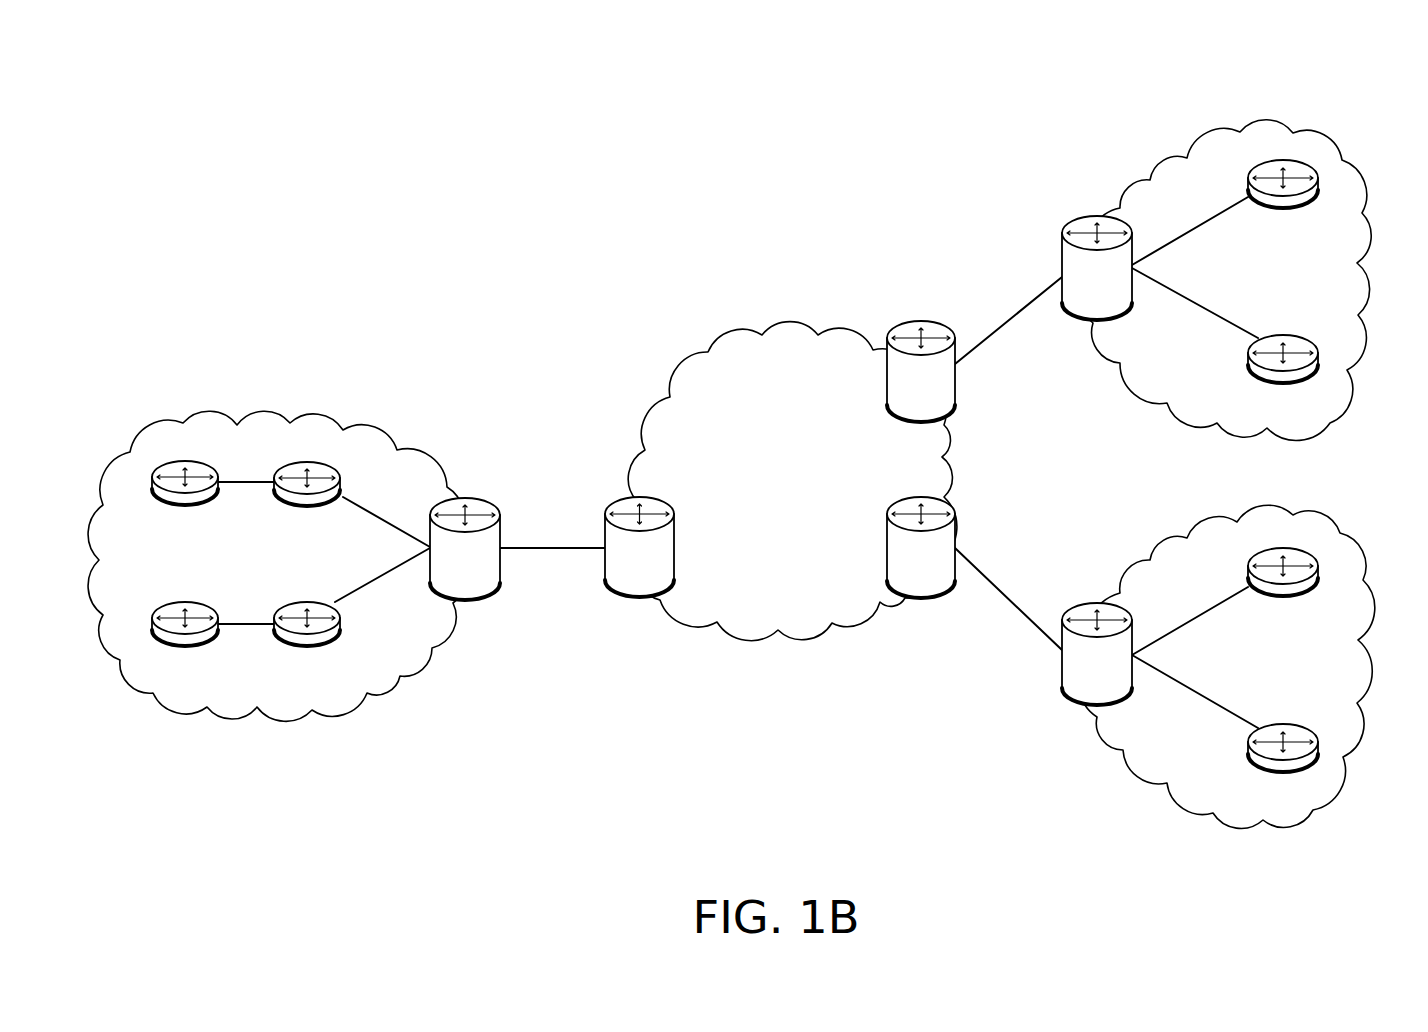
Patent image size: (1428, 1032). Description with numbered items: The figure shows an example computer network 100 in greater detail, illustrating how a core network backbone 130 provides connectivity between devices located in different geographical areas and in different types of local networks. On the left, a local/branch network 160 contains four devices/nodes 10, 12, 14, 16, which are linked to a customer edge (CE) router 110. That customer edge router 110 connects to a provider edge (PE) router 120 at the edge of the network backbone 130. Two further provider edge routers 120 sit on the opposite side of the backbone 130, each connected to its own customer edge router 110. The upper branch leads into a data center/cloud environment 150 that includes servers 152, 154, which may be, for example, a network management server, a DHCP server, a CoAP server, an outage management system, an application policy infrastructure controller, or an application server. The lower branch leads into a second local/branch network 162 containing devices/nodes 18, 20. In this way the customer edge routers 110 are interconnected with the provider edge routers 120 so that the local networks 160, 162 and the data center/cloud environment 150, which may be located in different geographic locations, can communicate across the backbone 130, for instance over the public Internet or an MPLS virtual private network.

The computer network 100 is at (1334, 66).
The device/node 10 is at (185, 499).
The device/node 12 is at (307, 500).
The device/node 14 is at (185, 641).
The device/node 16 is at (307, 641).
The device/node 18 is at (1283, 763).
The device/node 20 is at (1283, 588).
The customer edge (CE) router 110 is at (449, 586).
The provider edge (PE) router 120 is at (623, 586).
The network backbone 130 is at (765, 503).
The data center/cloud environment 150 is at (1194, 131).
The server 152 is at (1283, 199).
The server 154 is at (1283, 375).
The local/branch network 160 is at (334, 406).
The local/branch network 162 is at (1114, 762).